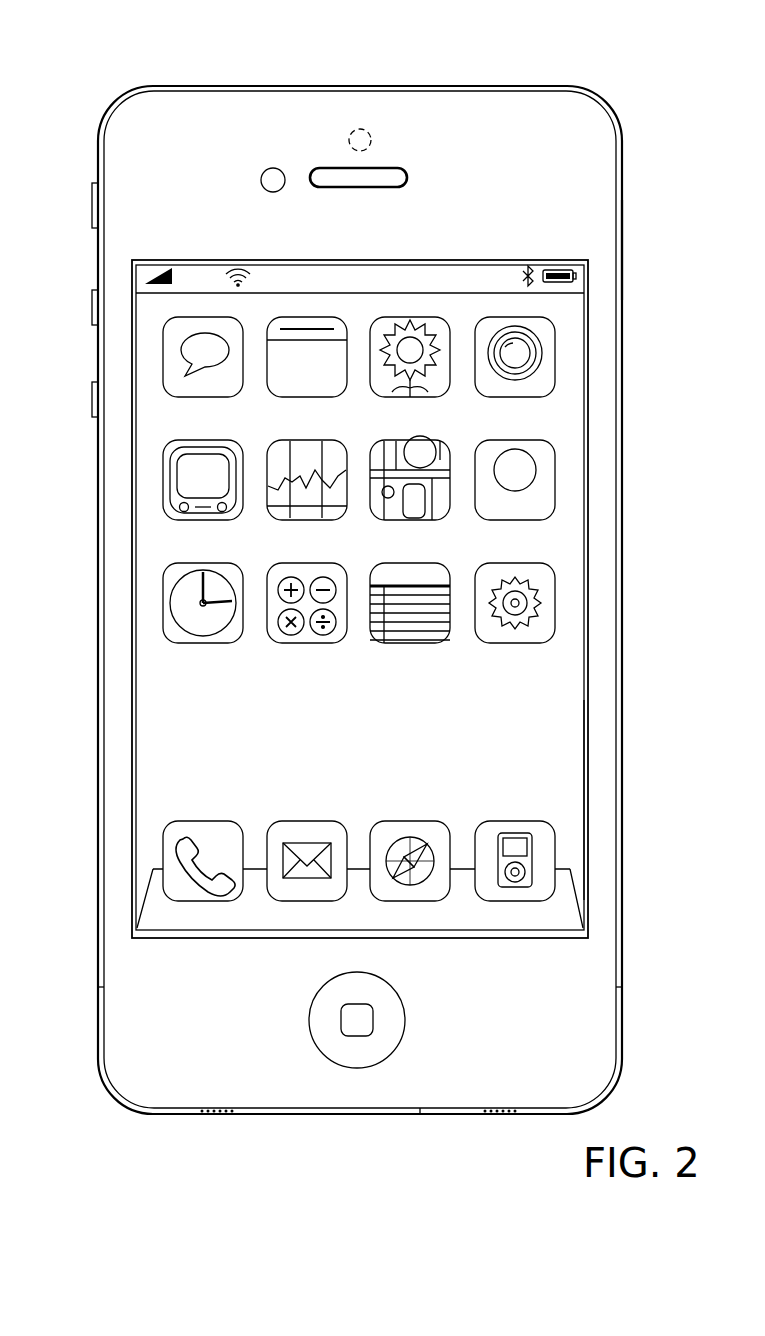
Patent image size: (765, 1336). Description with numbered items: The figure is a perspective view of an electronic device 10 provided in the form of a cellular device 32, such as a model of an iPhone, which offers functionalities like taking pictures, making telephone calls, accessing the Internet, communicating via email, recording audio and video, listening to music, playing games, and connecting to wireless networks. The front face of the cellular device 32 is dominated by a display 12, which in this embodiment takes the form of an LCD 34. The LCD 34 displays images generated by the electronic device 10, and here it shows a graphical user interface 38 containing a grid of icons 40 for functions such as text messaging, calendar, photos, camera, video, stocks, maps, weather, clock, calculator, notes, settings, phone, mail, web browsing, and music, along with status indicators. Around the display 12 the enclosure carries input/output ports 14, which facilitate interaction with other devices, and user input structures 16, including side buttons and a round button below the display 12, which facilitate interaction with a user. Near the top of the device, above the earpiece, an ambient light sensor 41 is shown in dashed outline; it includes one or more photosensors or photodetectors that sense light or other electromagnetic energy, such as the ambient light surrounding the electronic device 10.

The electronic device 10 is at (186, 46).
The display 12 is at (588, 574).
The input/output (I/O) ports 14 is at (237, 86).
The input structures 16 is at (478, 85).
The cellular device 32 is at (624, 252).
The LCD 34 is at (553, 771).
The graphical user interface (GUI) 38 is at (161, 749).
The icons 40 is at (170, 268).
The ambient light sensor 41 is at (366, 132).